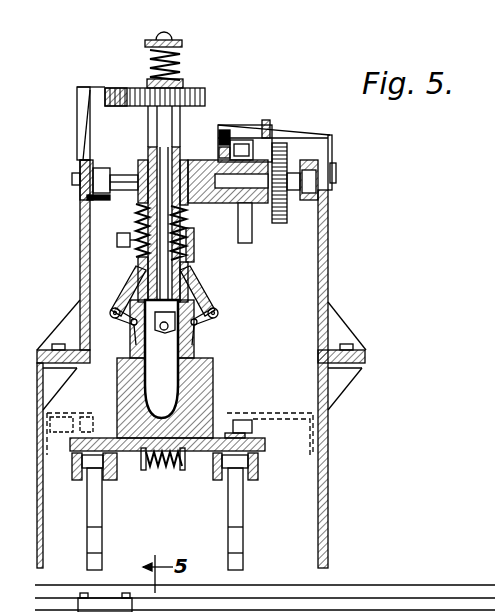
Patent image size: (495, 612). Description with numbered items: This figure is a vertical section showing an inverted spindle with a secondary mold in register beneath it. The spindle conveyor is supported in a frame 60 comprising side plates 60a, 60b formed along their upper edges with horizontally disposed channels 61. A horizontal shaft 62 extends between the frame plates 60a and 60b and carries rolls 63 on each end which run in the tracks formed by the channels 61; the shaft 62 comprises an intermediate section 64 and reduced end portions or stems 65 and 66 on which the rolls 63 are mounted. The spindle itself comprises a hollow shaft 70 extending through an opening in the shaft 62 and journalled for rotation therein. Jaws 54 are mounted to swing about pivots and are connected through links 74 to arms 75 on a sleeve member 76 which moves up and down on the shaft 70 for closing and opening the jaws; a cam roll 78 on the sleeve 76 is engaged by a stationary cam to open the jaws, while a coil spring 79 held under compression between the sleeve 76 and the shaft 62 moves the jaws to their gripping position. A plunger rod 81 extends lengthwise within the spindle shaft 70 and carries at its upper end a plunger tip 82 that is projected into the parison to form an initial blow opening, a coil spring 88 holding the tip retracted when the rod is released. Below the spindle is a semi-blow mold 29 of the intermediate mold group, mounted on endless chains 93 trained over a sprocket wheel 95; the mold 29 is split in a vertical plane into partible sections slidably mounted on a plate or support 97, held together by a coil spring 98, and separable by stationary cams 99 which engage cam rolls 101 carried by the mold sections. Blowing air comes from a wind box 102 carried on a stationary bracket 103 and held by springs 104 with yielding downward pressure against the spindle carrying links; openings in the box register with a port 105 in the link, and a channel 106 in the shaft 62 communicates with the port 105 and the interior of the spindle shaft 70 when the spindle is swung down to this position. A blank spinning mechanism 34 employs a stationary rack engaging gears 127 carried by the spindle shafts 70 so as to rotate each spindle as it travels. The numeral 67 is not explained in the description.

The semi-blow mold 29 is at (208, 375).
The blank spinning mechanism 34 is at (113, 90).
The jaws 54 is at (190, 343).
The frame 60 is at (330, 288).
The side plate 60a is at (330, 270).
The side plate 60b is at (82, 225).
The channels 61 is at (90, 198).
The horizontal shaft 62 is at (210, 198).
The rolls 63 is at (103, 170).
The intermediate section 64 is at (138, 200).
The reduced end portion 65 is at (123, 174).
The reduced end portion 66 is at (258, 208).
The gear 67 is at (283, 225).
The hollow shaft 70 is at (160, 117).
The links 74 is at (117, 319).
The arms 75 is at (122, 294).
The sleeve member 76 is at (194, 238).
The cam roll 78 is at (121, 242).
The coil spring 79 is at (137, 222).
The plunger rod 81 is at (178, 83).
The plunger tip 82 is at (178, 326).
The coil spring 88 is at (178, 66).
The endless chains 93 is at (258, 471).
The sprocket wheel 95 is at (243, 516).
The plate or support 97 is at (204, 453).
The coil spring 98 is at (160, 470).
The stationary cams 99 is at (68, 413).
The cam rolls 101 is at (252, 428).
The wind box 102 is at (240, 140).
The stationary bracket 103 is at (292, 130).
The springs 104 is at (220, 137).
The port 105 is at (272, 124).
The channel 106 is at (220, 153).
The gears 127 is at (205, 96).